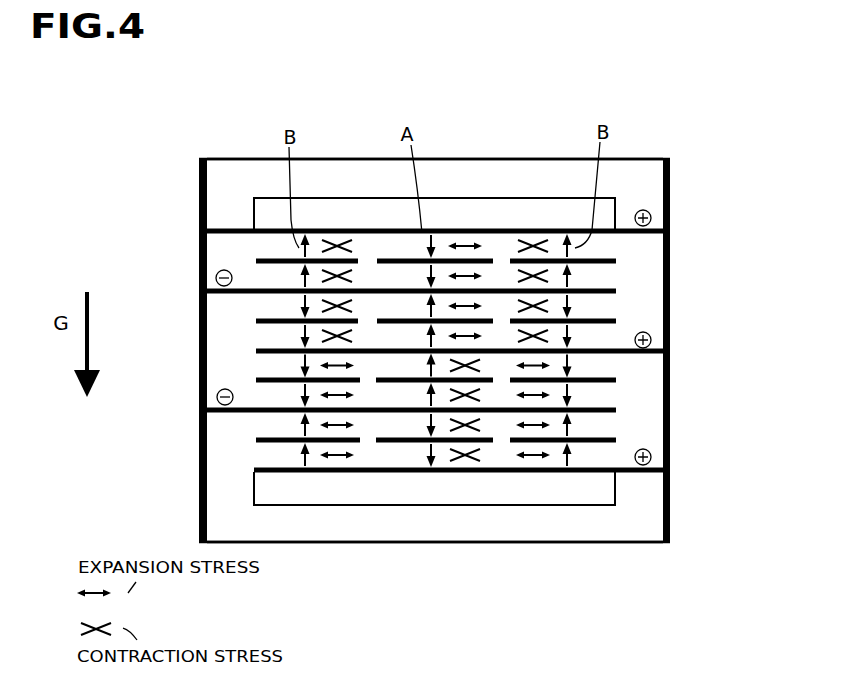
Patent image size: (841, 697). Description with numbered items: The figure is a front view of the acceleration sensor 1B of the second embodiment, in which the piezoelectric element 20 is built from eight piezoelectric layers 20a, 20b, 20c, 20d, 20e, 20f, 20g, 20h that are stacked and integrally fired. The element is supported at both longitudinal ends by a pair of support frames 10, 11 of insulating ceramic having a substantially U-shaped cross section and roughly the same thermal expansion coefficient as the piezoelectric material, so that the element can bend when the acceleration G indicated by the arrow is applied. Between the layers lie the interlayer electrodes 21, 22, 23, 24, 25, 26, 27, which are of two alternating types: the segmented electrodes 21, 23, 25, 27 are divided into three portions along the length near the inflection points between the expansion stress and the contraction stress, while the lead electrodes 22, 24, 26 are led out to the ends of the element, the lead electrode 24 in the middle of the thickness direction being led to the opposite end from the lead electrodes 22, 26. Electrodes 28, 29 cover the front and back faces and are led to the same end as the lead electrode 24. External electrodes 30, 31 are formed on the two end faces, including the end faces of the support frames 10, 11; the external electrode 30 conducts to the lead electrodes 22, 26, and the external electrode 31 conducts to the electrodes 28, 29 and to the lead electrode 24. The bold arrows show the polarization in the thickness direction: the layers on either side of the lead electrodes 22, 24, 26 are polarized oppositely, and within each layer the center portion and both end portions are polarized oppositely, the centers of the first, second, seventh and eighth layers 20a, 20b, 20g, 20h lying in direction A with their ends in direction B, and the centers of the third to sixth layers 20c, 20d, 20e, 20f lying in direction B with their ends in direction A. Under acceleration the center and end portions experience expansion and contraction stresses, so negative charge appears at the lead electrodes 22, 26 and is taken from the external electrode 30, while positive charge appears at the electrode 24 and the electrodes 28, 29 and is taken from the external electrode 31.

The acceleration sensor 1B is at (657, 152).
The support frame 10 is at (538, 172).
The support frame 11 is at (377, 530).
The external electrode 30 is at (199, 190).
The external electrode 31 is at (672, 190).
The electrode 28 is at (455, 228).
The electrode 29 is at (481, 473).
The segmented electrode 21 is at (257, 258).
The lead electrode 22 is at (260, 288).
The segmented electrode 23 is at (253, 321).
The lead electrode 24 is at (253, 350).
The segmented electrode 25 is at (253, 380).
The lead electrode 26 is at (245, 411).
The segmented electrode 27 is at (253, 443).
The piezoelectric element 20 is at (466, 347).
The piezoelectric layer 20a is at (613, 247).
The piezoelectric layer 20b is at (608, 277).
The piezoelectric layer 20c is at (613, 307).
The piezoelectric layer 20d is at (613, 339).
The piezoelectric layer 20e is at (613, 369).
The piezoelectric layer 20f is at (613, 399).
The piezoelectric layer 20g is at (613, 431).
The piezoelectric layer 20h is at (522, 458).